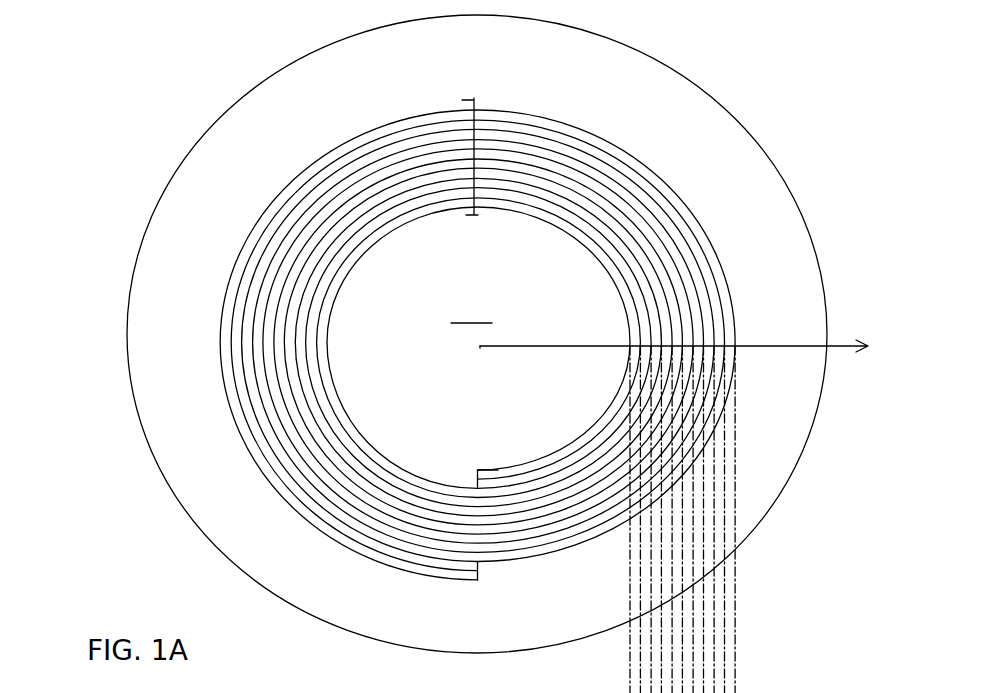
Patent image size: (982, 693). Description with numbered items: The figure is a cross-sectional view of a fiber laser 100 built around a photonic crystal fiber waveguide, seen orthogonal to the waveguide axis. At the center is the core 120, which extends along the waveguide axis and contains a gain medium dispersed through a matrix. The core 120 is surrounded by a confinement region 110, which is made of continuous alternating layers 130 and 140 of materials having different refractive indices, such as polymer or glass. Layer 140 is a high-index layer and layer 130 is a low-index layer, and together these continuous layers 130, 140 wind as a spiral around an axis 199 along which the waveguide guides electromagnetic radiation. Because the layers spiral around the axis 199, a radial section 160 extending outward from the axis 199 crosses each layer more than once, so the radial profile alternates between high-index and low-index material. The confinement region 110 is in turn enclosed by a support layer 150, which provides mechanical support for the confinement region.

The fiber laser 100 is at (484, 354).
The confinement region 110 is at (474, 100).
The core 120 is at (471, 314).
The low-index layer 130 is at (477, 483).
The high-index layer 140 is at (497, 469).
The support layer 150 is at (637, 82).
The radial section 160 is at (838, 346).
The axis 199 is at (480, 346).